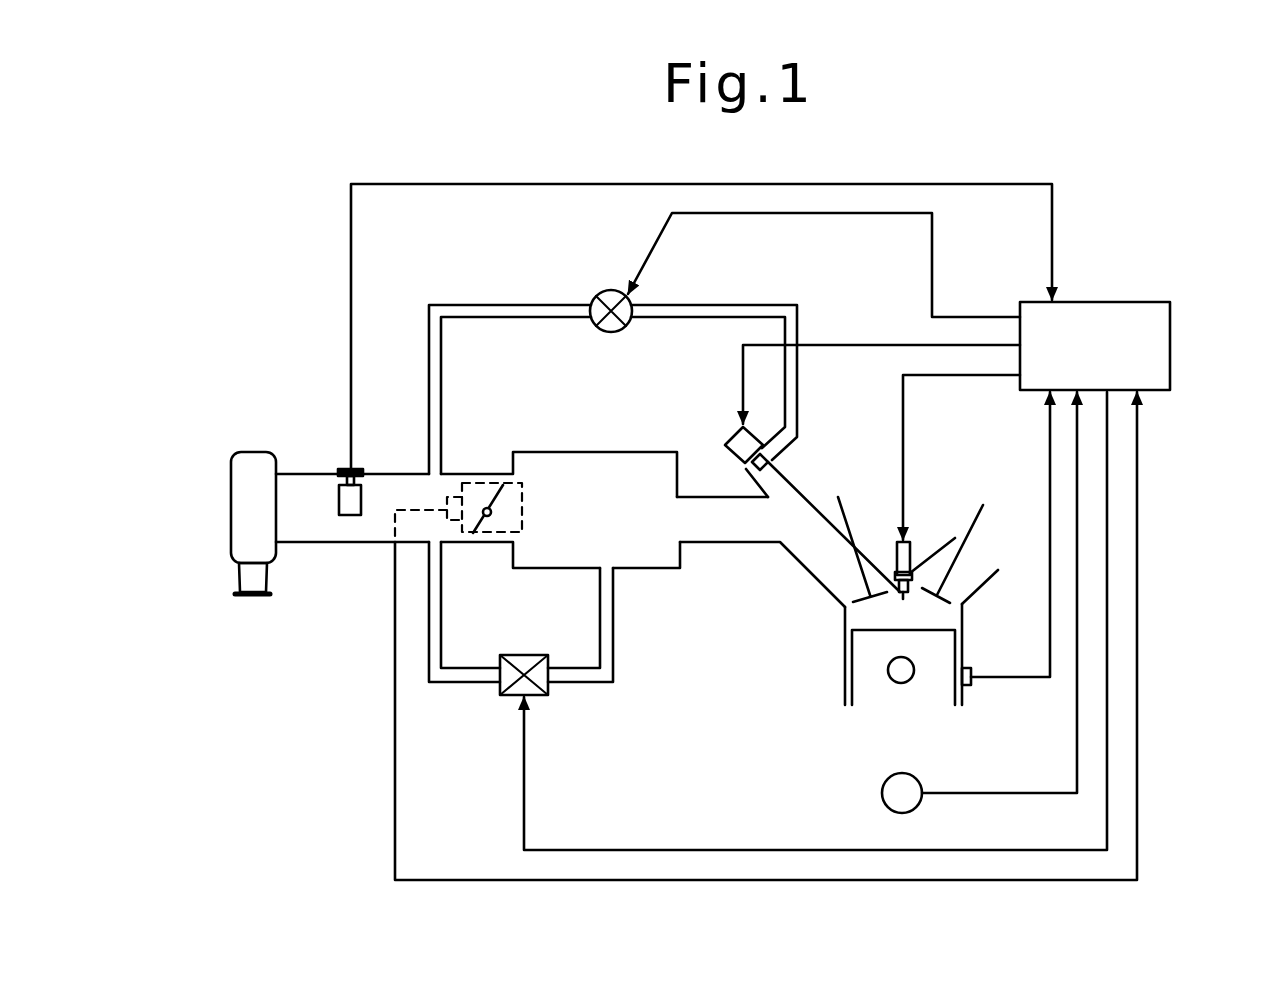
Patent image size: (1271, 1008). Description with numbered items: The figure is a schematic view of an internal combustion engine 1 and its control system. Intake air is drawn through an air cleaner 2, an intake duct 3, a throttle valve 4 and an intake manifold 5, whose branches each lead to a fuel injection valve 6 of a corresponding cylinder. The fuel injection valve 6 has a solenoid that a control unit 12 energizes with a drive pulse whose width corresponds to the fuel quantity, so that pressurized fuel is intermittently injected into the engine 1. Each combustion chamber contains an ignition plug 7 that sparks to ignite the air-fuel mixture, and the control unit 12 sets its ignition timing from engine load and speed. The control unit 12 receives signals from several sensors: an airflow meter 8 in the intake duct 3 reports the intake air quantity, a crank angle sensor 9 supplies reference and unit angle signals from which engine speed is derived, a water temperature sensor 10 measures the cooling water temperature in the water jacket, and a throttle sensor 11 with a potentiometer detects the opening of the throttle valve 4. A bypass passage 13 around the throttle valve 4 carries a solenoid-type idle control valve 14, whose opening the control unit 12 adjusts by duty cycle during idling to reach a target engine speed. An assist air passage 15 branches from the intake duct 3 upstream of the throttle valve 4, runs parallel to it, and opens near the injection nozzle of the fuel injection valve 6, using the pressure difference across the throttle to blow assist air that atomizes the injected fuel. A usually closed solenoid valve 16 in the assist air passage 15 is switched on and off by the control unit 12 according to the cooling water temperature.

The internal combustion engine 1 is at (951, 494).
The air cleaner 2 is at (238, 486).
The intake duct 3 is at (345, 544).
The throttle valve 4 is at (490, 486).
The intake manifold 5 is at (810, 492).
The fuel injection valve 6 is at (726, 450).
The ignition plug 7 is at (888, 552).
The airflow meter 8 is at (338, 468).
The crank angle sensor 9 is at (882, 798).
The water temperature sensor 10 is at (967, 687).
The throttle sensor 11 is at (498, 542).
The control unit 12 is at (1143, 302).
The bypass passage 13 is at (613, 626).
The idle control valve 14 is at (506, 697).
The assist air passage 15 is at (522, 304).
The solenoid valve 16 is at (610, 333).